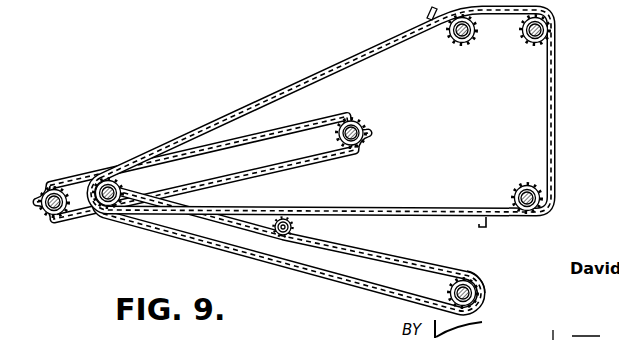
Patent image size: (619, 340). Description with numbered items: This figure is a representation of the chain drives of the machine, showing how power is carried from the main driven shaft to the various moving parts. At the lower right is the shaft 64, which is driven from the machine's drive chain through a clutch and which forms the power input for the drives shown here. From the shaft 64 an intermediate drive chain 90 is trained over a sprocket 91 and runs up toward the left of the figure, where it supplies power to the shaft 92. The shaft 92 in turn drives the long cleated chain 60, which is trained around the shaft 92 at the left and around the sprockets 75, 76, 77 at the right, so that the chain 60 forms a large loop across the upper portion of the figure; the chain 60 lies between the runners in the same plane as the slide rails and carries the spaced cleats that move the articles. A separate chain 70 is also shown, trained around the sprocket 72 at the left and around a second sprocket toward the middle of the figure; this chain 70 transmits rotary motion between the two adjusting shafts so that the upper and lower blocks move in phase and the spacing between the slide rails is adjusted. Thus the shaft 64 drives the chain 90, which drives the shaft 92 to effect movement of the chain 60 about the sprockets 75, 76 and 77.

The chain 60 is at (312, 86).
The shaft 64 is at (471, 296).
The chain 70 is at (217, 152).
The sprocket 72 is at (53, 216).
The sprocket 75 is at (522, 183).
The sprocket 76 is at (533, 46).
The sprocket 77 is at (460, 46).
The chain 90 is at (386, 265).
The sprocket 91 is at (467, 272).
The shaft 92 is at (109, 182).